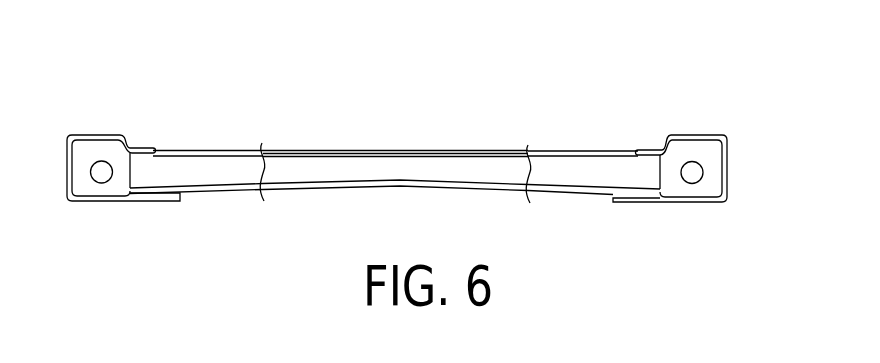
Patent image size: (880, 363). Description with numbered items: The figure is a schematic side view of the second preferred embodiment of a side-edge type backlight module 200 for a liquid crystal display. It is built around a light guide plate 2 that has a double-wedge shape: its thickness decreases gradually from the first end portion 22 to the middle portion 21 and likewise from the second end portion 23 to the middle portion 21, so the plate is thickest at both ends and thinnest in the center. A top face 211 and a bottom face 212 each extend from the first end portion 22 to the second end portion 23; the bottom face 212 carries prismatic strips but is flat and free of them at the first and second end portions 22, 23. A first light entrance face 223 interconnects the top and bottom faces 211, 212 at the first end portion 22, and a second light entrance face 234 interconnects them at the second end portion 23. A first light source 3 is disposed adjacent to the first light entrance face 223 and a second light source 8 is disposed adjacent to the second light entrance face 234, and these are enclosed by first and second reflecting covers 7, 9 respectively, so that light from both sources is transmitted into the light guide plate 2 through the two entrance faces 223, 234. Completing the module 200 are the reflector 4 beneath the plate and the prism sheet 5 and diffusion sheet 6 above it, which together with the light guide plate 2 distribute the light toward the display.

The backlight module 200 is at (763, 72).
The light guide plate 2 is at (514, 90).
The middle portion 21 is at (434, 124).
The first end portion 22 is at (232, 123).
The second end portion 23 is at (590, 127).
The top face 211 is at (382, 138).
The bottom face 212 is at (375, 183).
The reflector 4 is at (486, 190).
The prism sheet 5 is at (284, 156).
The diffusion sheet 6 is at (276, 152).
The first reflecting cover 7 is at (98, 135).
The second reflecting cover 9 is at (697, 135).
The first light source 3 is at (101, 173).
The second light source 8 is at (692, 173).
The first light entrance face 223 is at (131, 173).
The second light entrance face 234 is at (662, 176).